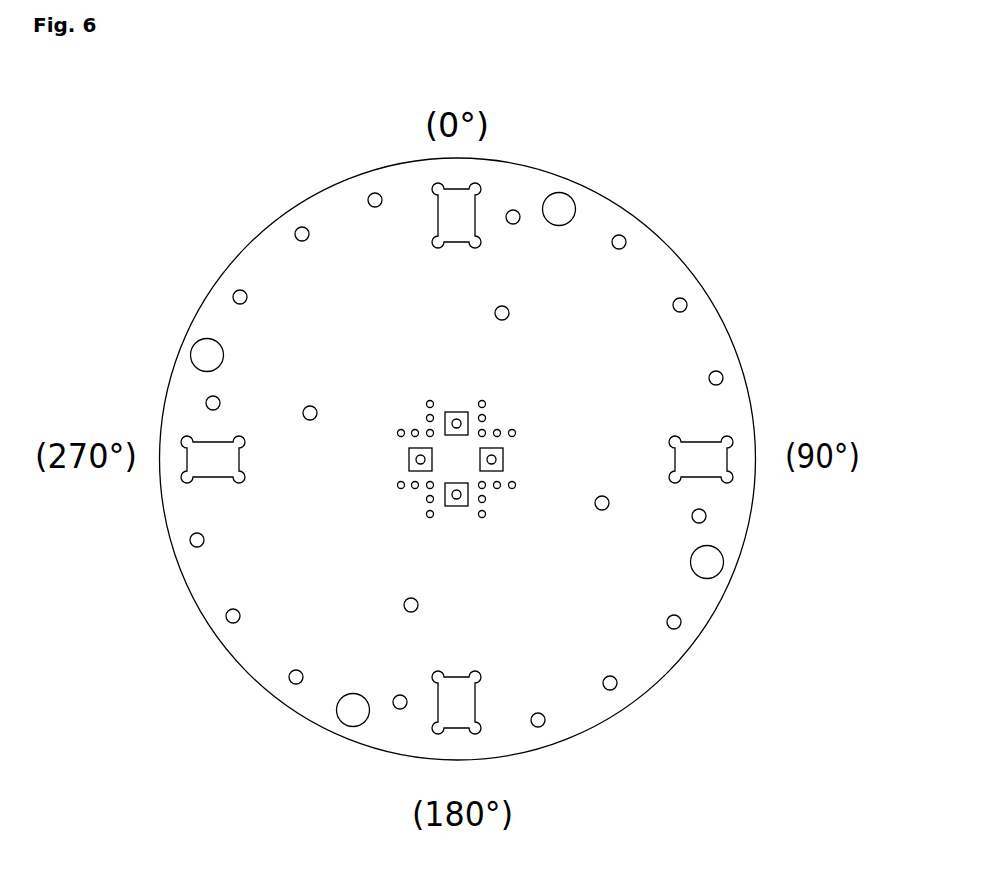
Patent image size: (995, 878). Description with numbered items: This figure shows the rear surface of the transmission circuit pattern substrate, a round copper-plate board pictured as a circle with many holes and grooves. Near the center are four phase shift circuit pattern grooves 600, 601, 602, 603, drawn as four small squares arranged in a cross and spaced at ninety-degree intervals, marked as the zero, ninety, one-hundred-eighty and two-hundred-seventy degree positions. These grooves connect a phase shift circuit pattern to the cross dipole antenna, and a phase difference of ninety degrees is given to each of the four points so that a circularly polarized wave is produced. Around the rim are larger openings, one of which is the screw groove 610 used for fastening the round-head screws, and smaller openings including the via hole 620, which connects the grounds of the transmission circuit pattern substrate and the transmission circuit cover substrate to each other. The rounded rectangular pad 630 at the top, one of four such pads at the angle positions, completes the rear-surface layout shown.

The phase shift circuit pattern groove 600 is at (459, 410).
The phase shift circuit pattern groove 601 is at (504, 459).
The phase shift circuit pattern groove 602 is at (455, 507).
The phase shift circuit pattern groove 603 is at (408, 459).
The screw groove 610 is at (560, 208).
The via hole 620 is at (299, 231).
The connector pad 630 is at (437, 188).